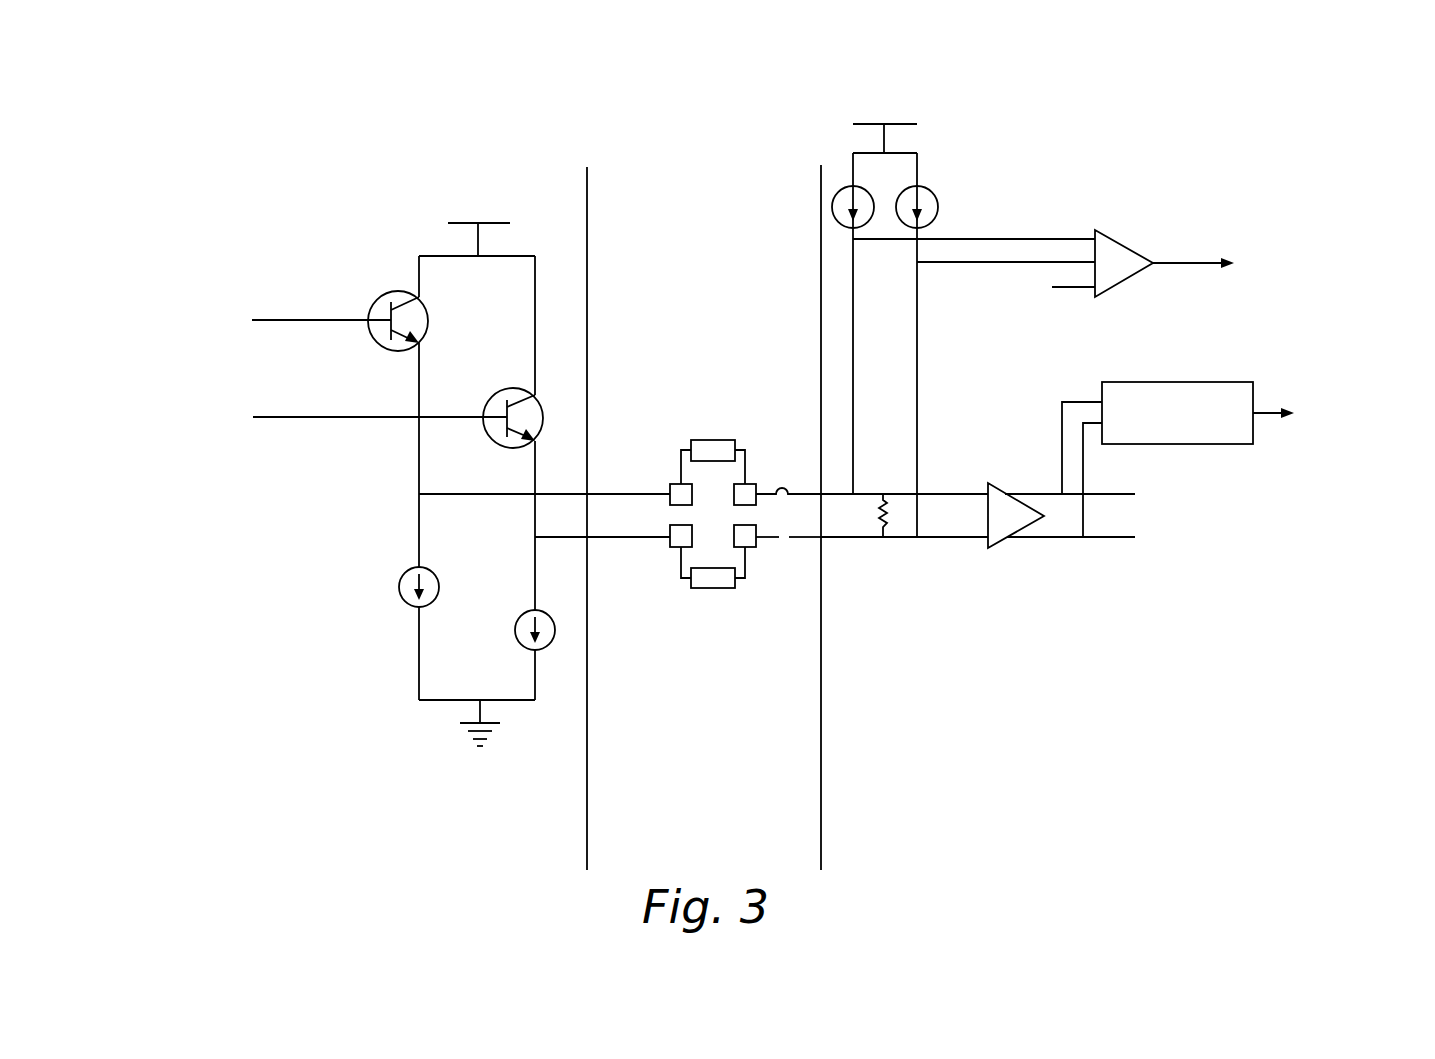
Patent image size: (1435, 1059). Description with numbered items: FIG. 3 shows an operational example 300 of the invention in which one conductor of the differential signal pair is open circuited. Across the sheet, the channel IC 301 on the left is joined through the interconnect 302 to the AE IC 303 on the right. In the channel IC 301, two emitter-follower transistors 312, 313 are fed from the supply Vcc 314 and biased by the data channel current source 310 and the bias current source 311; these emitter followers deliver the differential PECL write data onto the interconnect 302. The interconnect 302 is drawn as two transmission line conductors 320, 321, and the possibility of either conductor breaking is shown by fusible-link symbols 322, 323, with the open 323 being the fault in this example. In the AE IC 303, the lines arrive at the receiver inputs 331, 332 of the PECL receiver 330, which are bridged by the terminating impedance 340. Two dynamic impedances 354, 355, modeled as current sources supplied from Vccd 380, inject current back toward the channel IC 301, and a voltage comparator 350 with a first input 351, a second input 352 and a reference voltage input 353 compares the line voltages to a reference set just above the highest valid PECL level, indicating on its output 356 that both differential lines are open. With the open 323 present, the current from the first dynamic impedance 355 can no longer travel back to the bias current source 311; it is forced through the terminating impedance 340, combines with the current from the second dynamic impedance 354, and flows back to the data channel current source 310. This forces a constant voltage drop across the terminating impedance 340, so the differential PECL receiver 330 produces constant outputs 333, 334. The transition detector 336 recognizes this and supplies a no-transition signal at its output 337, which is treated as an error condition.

The operational example 300 is at (784, 86).
The channel IC 301 is at (424, 489).
The interconnect 302 is at (739, 489).
The AE IC 303 is at (1122, 332).
The data channel current source 310 is at (415, 575).
The bias current source 311 is at (516, 618).
The transistor Q15 312 is at (368, 323).
The transistor Q16 313 is at (419, 422).
The supply voltage Vcc 314 is at (502, 220).
The interconnect resistor 320 is at (713, 446).
The interconnect resistor 321 is at (713, 585).
The open differential line 322 is at (788, 476).
The open 323 is at (788, 552).
The PECL receiver 330 is at (1037, 540).
The receiver input line 331 is at (904, 483).
The receiver input line 332 is at (904, 526).
The PECL receiver output 333 is at (1075, 448).
The PECL receiver output 334 is at (1076, 498).
The transition detector 336 is at (1177, 400).
The transition detector output 337 is at (1338, 403).
The terminating impedance 340 is at (862, 515).
The comparator 350 is at (1124, 263).
The comparator input In1 351 is at (974, 227).
The comparator input In3 352 is at (1006, 265).
The reference voltage Vref 353 is at (1071, 290).
The second dynamic impedance 354 is at (866, 197).
The first dynamic impedance 355 is at (934, 197).
The both differential lines open output 356 is at (1211, 228).
The supply voltage Vccd 380 is at (912, 98).